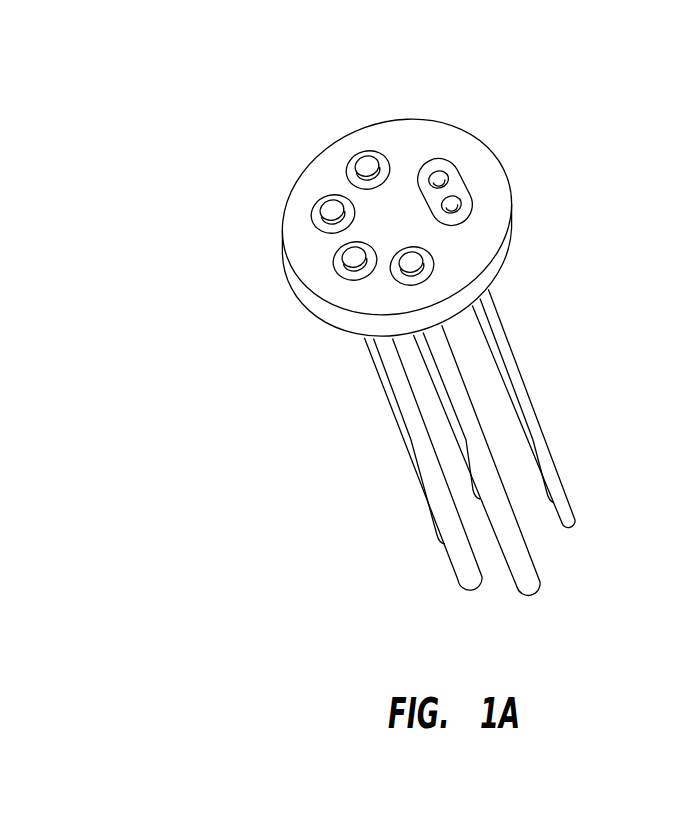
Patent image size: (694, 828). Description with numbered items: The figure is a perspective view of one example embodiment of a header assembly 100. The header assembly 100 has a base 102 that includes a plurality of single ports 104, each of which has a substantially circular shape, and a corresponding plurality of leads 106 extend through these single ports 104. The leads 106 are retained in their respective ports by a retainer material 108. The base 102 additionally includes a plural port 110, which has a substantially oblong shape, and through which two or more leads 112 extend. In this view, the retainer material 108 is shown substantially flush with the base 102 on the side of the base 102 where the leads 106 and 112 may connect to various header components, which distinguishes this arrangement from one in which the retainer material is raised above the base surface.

The header assembly 100 is at (302, 82).
The base 102 is at (450, 127).
The single ports 104 is at (347, 167).
The leads 106 is at (487, 463).
The retainer material 108 is at (338, 267).
The plural port 110 is at (457, 187).
The leads 112 is at (522, 393).